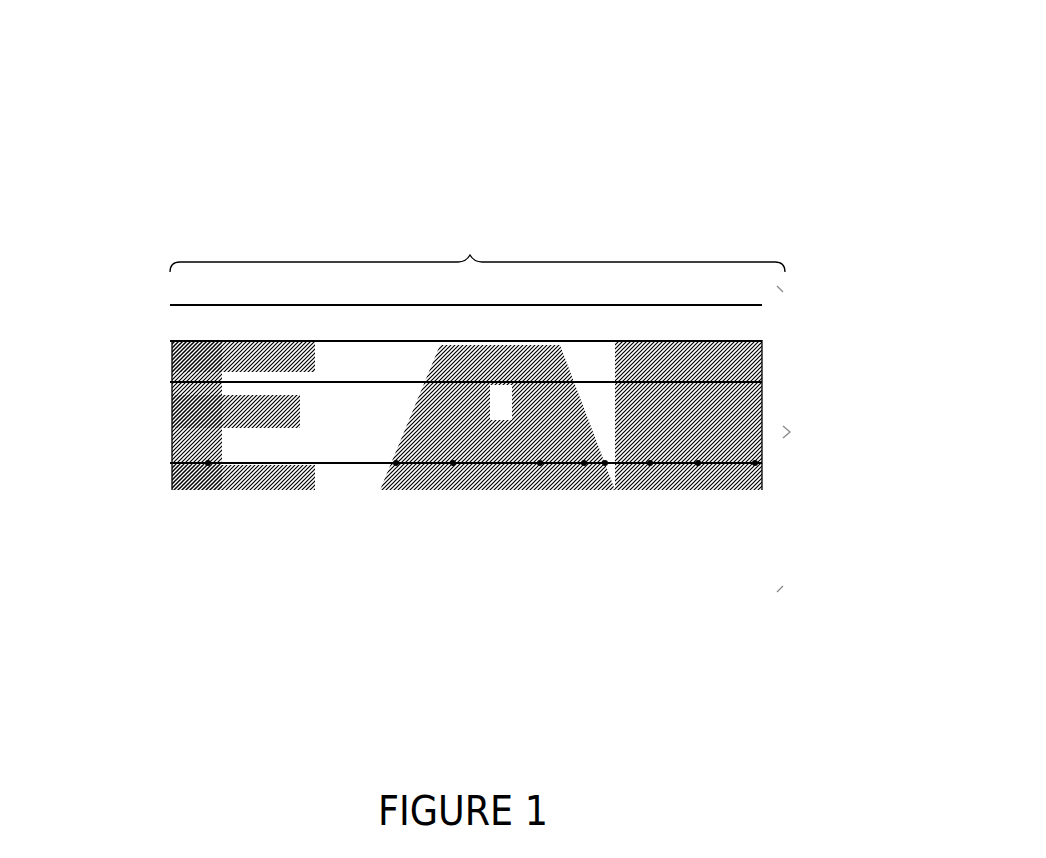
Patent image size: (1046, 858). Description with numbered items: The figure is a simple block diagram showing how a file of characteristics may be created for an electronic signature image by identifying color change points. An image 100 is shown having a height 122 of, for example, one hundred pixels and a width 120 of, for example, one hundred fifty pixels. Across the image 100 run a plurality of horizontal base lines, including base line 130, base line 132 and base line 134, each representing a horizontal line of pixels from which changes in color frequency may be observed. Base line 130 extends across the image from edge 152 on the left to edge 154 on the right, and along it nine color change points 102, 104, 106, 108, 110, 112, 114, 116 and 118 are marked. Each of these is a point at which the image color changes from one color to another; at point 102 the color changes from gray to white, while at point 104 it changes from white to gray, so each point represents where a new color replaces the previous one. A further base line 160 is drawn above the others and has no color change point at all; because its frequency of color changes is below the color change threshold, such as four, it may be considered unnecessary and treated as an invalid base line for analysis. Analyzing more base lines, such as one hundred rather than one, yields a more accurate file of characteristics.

The image 100 is at (201, 93).
The color change point 102 is at (208, 463).
The color change point 104 is at (396, 463).
The color change point 106 is at (453, 463).
The color change point 108 is at (540, 463).
The color change point 110 is at (584, 463).
The color change point 112 is at (605, 463).
The color change point 114 is at (650, 463).
The color change point 116 is at (698, 463).
The color change point 118 is at (755, 463).
The width 120 is at (477, 248).
The height 122 is at (821, 439).
The base line 130 is at (466, 451).
The base line 132 is at (466, 371).
The base line 134 is at (466, 329).
The base line 160 is at (466, 293).
The edge 152 is at (170, 421).
The edge 154 is at (765, 404).